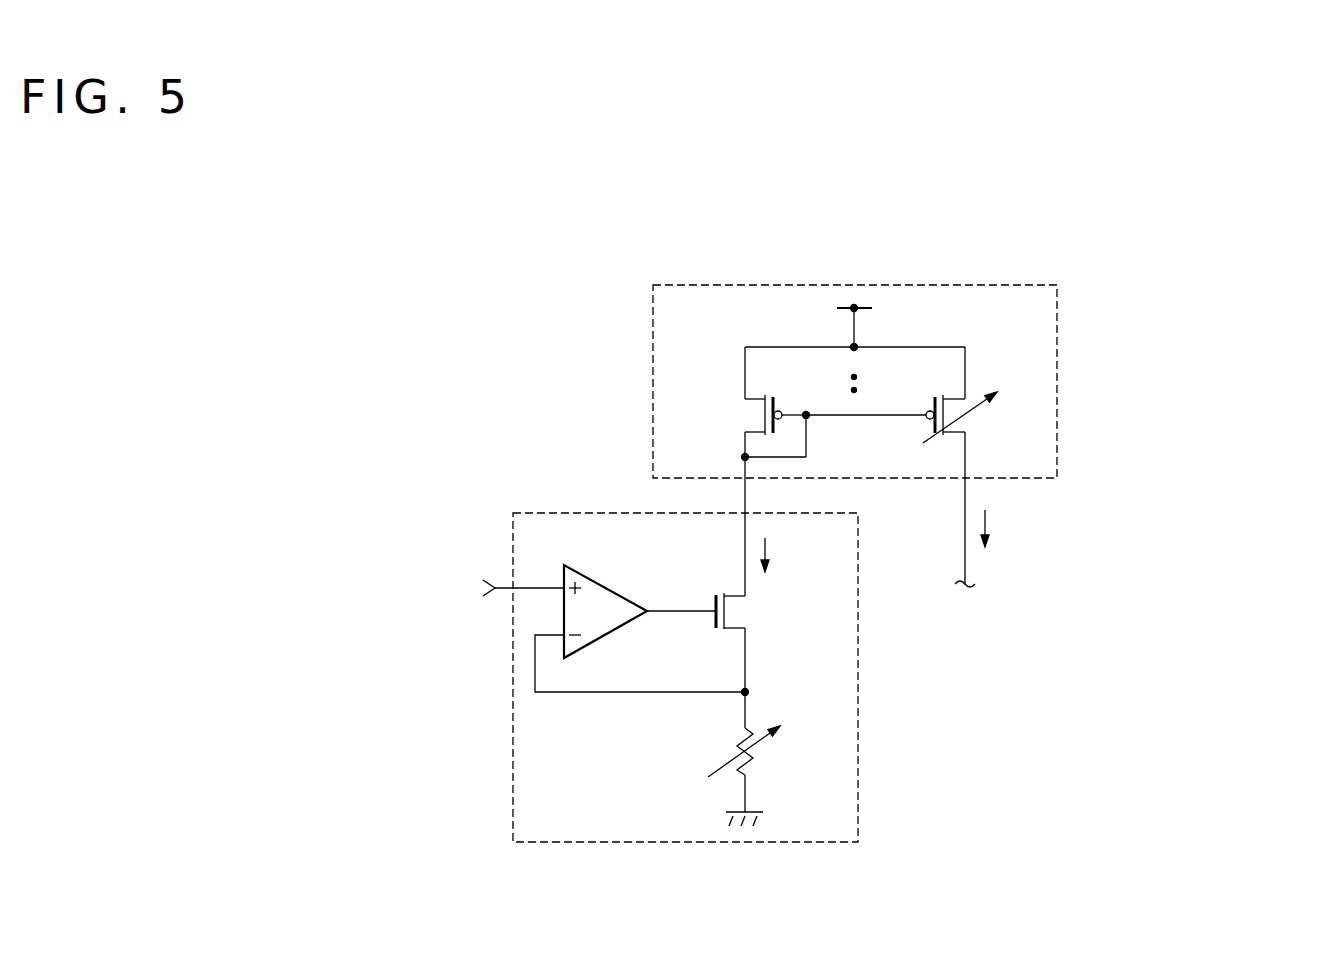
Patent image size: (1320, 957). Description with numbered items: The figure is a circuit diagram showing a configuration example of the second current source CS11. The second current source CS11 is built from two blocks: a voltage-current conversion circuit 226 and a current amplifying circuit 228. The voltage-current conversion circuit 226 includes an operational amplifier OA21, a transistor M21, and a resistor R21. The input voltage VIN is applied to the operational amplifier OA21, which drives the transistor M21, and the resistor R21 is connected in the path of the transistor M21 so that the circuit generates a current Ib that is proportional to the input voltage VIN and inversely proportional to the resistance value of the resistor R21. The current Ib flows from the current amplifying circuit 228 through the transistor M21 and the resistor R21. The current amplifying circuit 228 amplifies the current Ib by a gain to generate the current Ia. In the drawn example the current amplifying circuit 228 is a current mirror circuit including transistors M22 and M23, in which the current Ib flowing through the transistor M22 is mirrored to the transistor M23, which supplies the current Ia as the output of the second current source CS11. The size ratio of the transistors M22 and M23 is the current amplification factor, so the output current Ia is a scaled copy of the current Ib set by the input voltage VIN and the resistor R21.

The second current source CS11 is at (1317, 234).
The current amplifying circuit 228 is at (1057, 336).
The voltage-current conversion circuit 226 is at (858, 726).
The transistor M21 is at (725, 642).
The transistor M22 is at (748, 404).
The transistor M23 is at (923, 412).
The operational amplifier OA21 is at (622, 562).
The resistor R21 is at (758, 752).
The current Ia is at (999, 528).
The current Ib is at (780, 555).
The input voltage VIN is at (505, 589).